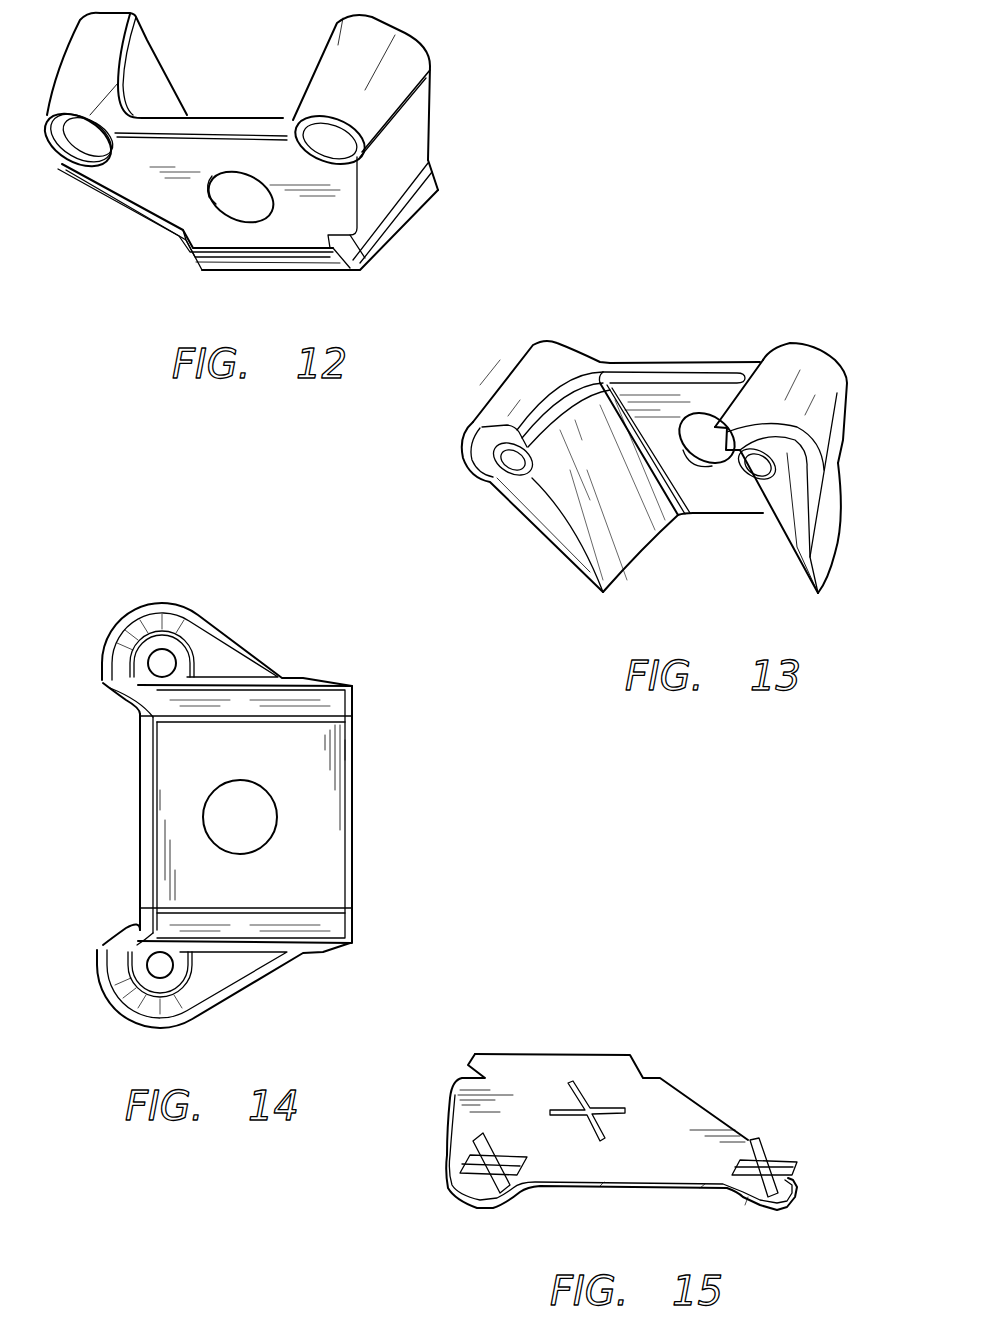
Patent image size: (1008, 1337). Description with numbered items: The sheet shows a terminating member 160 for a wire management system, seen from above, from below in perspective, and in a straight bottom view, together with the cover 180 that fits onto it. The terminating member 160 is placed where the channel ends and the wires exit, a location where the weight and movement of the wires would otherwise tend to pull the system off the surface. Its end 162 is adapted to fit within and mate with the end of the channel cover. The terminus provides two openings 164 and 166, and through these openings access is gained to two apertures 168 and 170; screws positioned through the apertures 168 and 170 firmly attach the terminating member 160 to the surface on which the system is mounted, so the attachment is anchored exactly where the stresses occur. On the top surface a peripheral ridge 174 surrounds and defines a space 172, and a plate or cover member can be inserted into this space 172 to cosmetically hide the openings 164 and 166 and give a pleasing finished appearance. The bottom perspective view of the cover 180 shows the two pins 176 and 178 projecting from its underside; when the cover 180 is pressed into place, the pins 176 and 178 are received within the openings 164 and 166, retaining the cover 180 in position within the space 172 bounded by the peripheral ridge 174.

In FIG. 12, the terminating member 160 is at (490, 95).
In FIG. 12, the end 162 is at (397, 237).
In FIG. 12, the opening 164 is at (318, 137).
In FIG. 12, the opening 166 is at (87, 143).
In FIG. 13, the aperture 168 is at (763, 468).
In FIG. 14, the aperture 168 is at (155, 667).
In FIG. 13, the aperture 170 is at (512, 465).
In FIG. 14, the aperture 170 is at (150, 966).
In FIG. 12, the space 172 is at (163, 200).
In FIG. 12, the peripheral ridge 174 is at (250, 254).
In FIG. 15, the pin 176 is at (762, 1152).
In FIG. 15, the pin 178 is at (487, 1172).
In FIG. 15, the cover 180 is at (676, 1018).